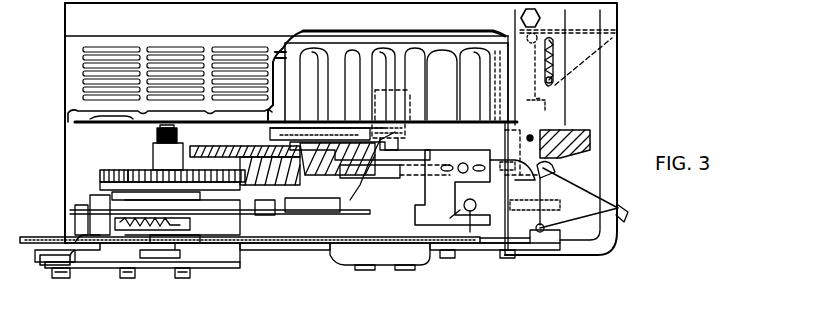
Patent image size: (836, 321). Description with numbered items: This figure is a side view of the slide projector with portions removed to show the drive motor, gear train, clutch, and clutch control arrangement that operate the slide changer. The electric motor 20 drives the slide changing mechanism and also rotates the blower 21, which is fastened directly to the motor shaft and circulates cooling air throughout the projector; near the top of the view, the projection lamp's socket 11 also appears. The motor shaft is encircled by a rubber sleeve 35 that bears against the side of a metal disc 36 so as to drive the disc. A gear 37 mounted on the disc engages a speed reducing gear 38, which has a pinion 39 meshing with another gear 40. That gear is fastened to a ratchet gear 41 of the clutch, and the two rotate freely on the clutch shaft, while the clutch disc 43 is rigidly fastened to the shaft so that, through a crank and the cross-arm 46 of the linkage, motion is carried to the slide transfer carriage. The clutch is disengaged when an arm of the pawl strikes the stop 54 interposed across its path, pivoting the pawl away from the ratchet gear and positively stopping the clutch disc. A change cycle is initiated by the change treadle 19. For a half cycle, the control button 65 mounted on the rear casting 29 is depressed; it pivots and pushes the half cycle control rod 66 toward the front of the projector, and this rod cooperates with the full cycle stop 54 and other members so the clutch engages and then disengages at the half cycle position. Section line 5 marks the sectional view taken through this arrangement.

The section line 5- 5 is at (72, 205).
The socket 11 is at (484, 232).
The change treadle 19 is at (622, 220).
The electric motor 20 is at (396, 262).
The blower 21 is at (415, 60).
The rear casting 29 is at (614, 38).
The rubber sleeve 35 is at (405, 135).
The metal disc 36 is at (402, 135).
The gear 37 is at (340, 180).
The speed reducing gear 38 is at (290, 160).
The pinion 39 is at (268, 183).
The gear 40 is at (147, 174).
The ratchet gear 41 is at (104, 172).
The clutch disc 43 is at (197, 212).
The cross-arm 46 is at (98, 270).
The stop 54 is at (88, 210).
The control button 65 is at (592, 144).
The half cycle control rod 66 is at (352, 232).